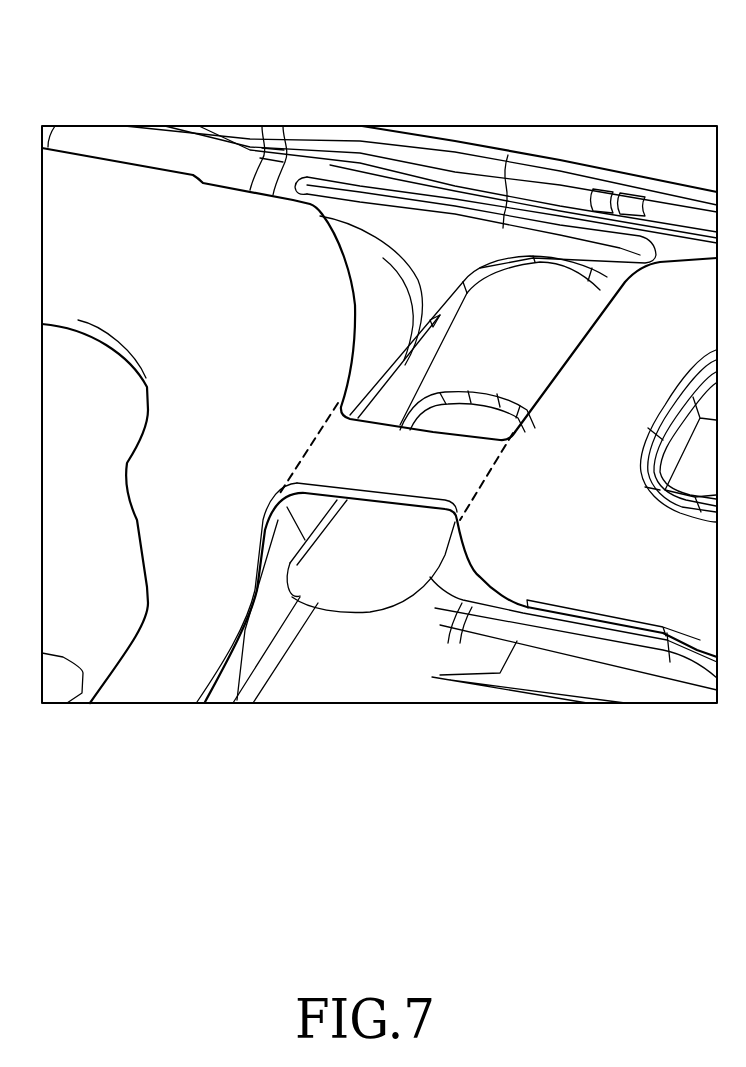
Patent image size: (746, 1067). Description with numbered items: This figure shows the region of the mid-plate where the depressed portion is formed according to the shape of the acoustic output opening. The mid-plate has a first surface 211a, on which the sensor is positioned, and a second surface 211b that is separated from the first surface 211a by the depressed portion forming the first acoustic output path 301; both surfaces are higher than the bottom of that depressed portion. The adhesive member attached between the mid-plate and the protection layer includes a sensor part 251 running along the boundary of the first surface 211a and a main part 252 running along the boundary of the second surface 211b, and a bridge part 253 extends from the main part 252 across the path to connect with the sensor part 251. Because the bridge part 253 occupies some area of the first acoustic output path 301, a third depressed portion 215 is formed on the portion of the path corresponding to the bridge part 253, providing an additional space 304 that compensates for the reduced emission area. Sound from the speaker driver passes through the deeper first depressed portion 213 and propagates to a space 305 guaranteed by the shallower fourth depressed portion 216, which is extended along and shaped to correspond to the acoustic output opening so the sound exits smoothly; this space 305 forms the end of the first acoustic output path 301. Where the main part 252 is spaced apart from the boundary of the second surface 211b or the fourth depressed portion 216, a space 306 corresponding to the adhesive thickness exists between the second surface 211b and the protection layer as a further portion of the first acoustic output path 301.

The main part 252 is at (157, 677).
The bridge part 253 is at (408, 467).
The sensor part 251 is at (632, 563).
The second surface 211b is at (383, 269).
The space 306 is at (374, 322).
The fourth depressed portion 216 is at (433, 235).
The space 305 is at (457, 237).
The first acoustic output path 301 is at (524, 325).
The additional space 304 is at (318, 592).
The first depressed portion 213 is at (350, 662).
The third depressed portion 215 is at (376, 570).
The first surface 211a is at (463, 578).